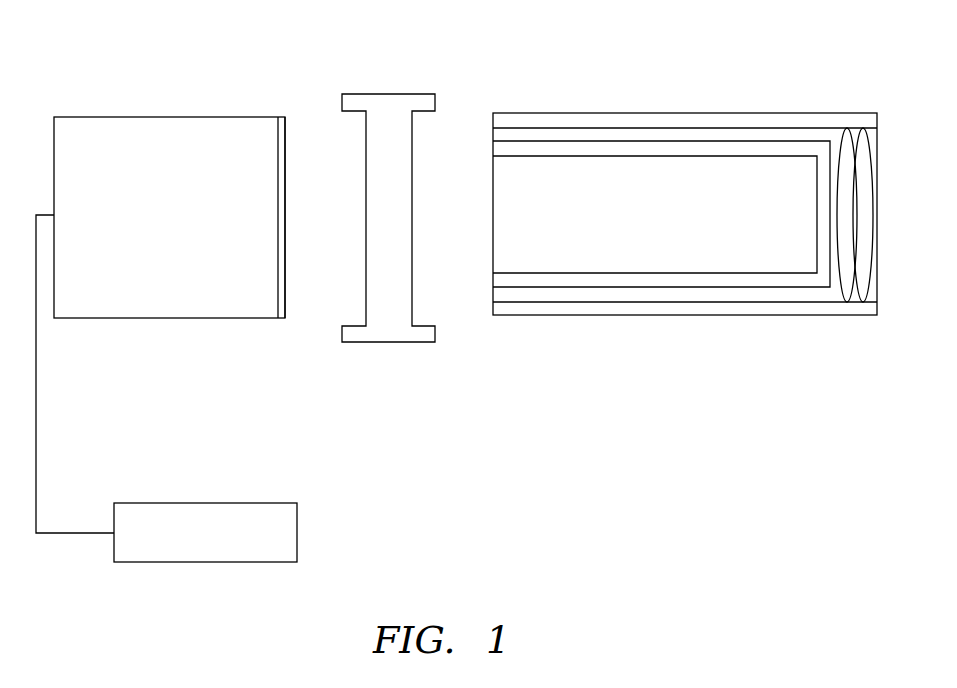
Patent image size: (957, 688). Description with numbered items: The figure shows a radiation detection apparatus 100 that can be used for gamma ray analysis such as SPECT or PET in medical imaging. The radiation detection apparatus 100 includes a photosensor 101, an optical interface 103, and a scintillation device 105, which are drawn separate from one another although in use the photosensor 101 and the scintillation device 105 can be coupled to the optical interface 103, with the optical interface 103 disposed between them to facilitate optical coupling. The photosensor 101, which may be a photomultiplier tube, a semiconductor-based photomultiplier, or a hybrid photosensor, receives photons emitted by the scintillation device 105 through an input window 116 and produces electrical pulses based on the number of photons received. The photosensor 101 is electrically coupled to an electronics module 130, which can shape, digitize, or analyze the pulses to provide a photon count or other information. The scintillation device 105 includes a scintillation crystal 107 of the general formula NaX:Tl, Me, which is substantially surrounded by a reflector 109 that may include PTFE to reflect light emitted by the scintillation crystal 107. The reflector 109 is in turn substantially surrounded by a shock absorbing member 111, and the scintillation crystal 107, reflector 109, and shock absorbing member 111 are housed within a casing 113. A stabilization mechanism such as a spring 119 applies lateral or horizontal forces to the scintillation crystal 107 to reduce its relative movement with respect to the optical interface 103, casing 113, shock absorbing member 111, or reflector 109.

The radiation detection apparatus 100 is at (115, 42).
The photosensor 101 is at (189, 231).
The optical interface 103 is at (380, 343).
The scintillation device 105 is at (694, 245).
The scintillation crystal 107 is at (675, 231).
The reflector 109 is at (728, 150).
The shock absorbing member 111 is at (633, 135).
The casing 113 is at (547, 113).
The input window 116 is at (287, 235).
The spring 119 is at (853, 130).
The electronics module 130 is at (212, 503).